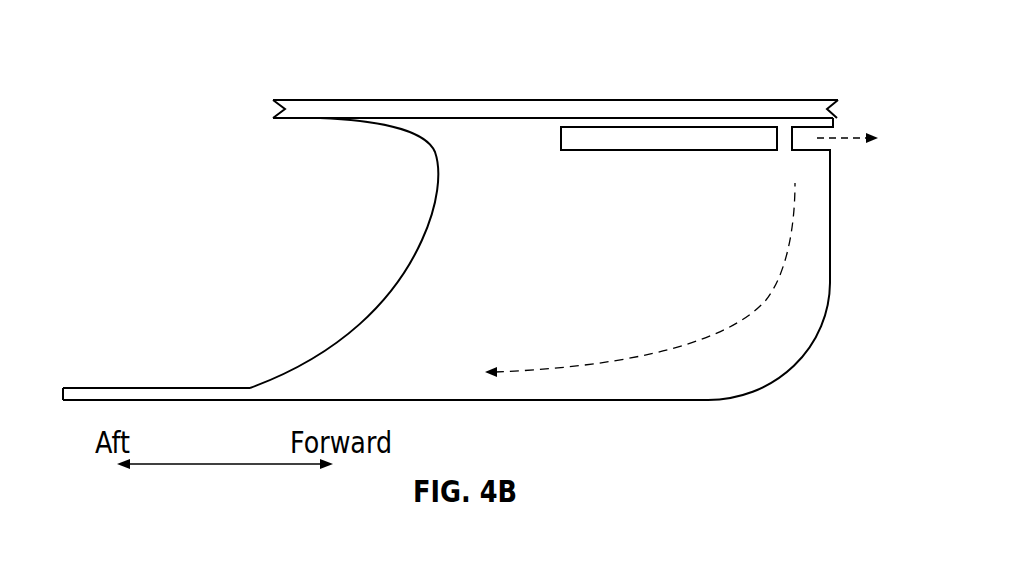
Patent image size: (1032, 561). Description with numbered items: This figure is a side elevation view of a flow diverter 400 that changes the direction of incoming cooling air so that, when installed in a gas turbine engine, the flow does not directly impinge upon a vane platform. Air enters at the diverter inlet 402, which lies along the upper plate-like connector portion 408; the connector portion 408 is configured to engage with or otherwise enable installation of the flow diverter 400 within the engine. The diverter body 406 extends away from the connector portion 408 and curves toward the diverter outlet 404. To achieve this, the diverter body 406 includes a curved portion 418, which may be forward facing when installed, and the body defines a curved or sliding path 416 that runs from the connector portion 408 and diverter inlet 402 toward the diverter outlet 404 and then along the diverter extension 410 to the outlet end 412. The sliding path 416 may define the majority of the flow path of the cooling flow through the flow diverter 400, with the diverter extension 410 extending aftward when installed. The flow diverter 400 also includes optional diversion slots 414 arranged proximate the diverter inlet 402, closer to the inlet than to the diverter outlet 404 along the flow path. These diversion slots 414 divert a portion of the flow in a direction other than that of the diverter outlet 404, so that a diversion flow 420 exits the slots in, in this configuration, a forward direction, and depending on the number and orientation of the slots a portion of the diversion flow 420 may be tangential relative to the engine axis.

The flow diverter 400 is at (182, 47).
The diverter inlet 402 is at (598, 94).
The diverter outlet 404 is at (331, 252).
The diverter body 406 is at (818, 226).
The connector portion 408 is at (288, 99).
The diverter extension 410 is at (184, 387).
The outlet end 412 is at (62, 392).
The diversion slots 414 is at (660, 137).
The sliding path 416 is at (475, 386).
The curved portion 418 is at (780, 370).
The diversion flow 420 is at (935, 152).